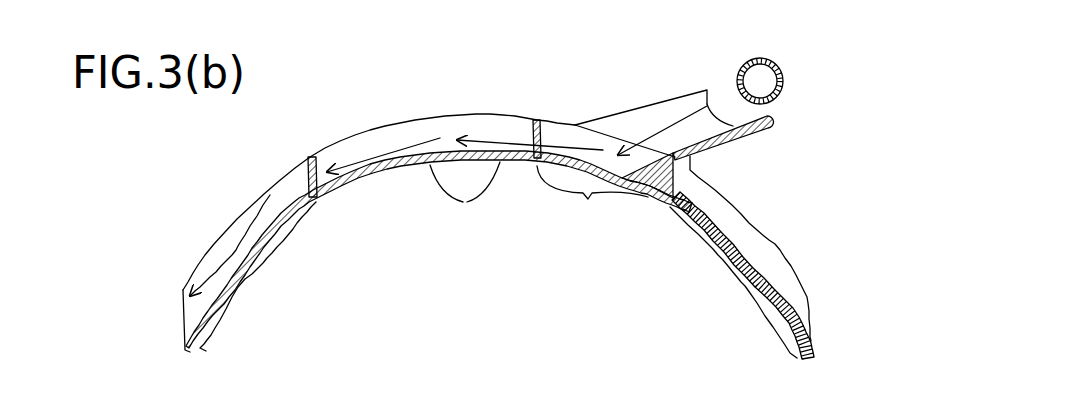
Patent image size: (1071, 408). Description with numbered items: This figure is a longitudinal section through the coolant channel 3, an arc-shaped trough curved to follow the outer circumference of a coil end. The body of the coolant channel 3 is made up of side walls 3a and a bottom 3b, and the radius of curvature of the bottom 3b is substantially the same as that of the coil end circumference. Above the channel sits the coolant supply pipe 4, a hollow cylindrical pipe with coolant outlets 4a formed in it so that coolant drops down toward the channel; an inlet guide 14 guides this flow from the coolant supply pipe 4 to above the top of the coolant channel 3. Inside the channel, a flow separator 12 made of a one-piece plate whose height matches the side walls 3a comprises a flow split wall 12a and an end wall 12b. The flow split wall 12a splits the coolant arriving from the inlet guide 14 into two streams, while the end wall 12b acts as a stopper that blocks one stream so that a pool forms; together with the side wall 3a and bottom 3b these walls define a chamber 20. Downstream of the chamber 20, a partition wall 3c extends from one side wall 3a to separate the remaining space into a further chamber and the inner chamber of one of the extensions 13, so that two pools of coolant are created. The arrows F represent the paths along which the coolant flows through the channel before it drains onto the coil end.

The coolant channel 3 is at (272, 181).
The side walls 3a is at (393, 128).
The bottom 3b is at (385, 173).
The partition wall 3c is at (312, 157).
The coolant supply pipe 4 is at (774, 61).
The coolant outlets 4a is at (738, 124).
The flow separator 12 is at (582, 58).
The flow split wall 12a is at (558, 128).
The end wall 12b is at (534, 119).
The extensions 13 is at (258, 268).
The inlet guide 14 is at (715, 152).
The chamber 20 is at (592, 194).
The arrows representing coolant flow paths F is at (465, 194).